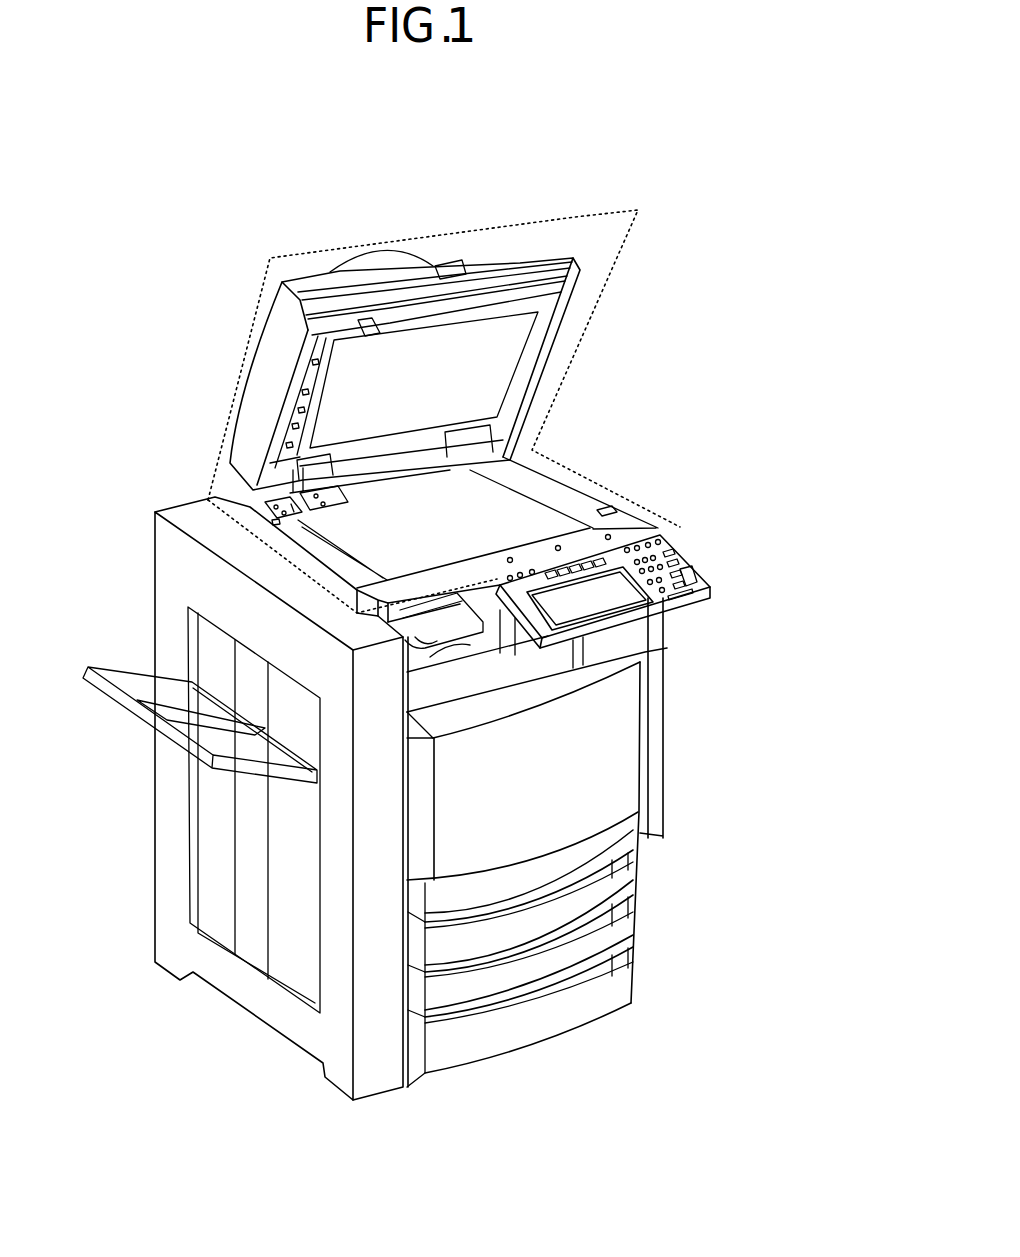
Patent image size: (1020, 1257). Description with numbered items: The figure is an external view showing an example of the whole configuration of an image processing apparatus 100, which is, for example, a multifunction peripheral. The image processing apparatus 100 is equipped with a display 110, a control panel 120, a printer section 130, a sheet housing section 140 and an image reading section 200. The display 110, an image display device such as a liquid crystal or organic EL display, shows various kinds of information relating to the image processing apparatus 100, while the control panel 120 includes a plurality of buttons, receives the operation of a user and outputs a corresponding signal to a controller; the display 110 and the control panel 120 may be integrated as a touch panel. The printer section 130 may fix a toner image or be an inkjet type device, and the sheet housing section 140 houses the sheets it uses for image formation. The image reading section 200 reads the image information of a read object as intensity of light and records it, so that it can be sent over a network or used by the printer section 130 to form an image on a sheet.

The image processing apparatus 100 is at (488, 168).
The image reading section 200 is at (575, 217).
The display 110 is at (603, 588).
The control panel 120 is at (692, 565).
The printer section 130 is at (712, 752).
The sheet housing section 140 is at (648, 998).